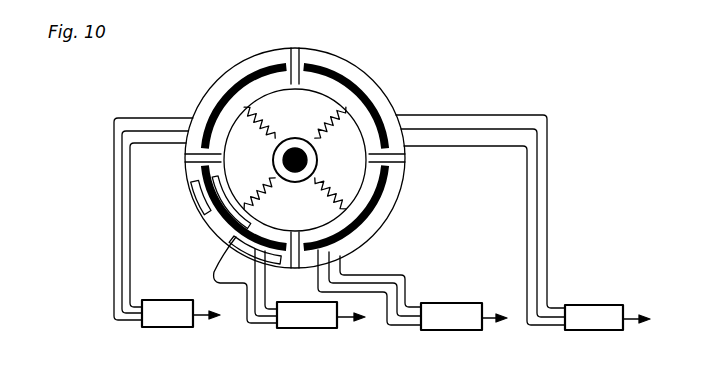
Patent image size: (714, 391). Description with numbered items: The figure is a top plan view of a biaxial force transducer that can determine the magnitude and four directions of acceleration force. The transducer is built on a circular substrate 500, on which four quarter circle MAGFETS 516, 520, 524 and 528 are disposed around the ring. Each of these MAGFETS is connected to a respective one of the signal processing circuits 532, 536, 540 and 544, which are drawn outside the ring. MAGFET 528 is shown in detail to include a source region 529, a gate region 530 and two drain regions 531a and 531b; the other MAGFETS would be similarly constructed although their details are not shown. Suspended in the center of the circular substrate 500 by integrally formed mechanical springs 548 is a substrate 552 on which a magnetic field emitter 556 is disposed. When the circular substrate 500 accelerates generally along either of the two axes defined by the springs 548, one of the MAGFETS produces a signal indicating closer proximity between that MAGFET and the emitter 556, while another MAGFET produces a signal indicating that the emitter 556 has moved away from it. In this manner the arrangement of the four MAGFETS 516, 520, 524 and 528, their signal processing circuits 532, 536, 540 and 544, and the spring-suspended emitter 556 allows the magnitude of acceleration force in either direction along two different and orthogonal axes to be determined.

The circular substrate 500 is at (206, 100).
The quarter circle MAGFET 516 is at (238, 72).
The quarter circle MAGFET 520 is at (379, 84).
The quarter circle MAGFET 524 is at (387, 205).
The quarter circle MAGFET 528 is at (199, 225).
The source region 529 is at (262, 188).
The gate region 530 is at (188, 173).
The drain region 531a is at (212, 182).
The drain region 531b is at (214, 276).
The signal processing circuit 532 is at (168, 328).
The signal processing circuit 536 is at (316, 328).
The signal processing circuit 540 is at (456, 330).
The signal processing circuit 544 is at (590, 330).
The mechanical springs 548 is at (260, 194).
The substrate 552 is at (292, 137).
The magnetic field emitter 556 is at (298, 136).